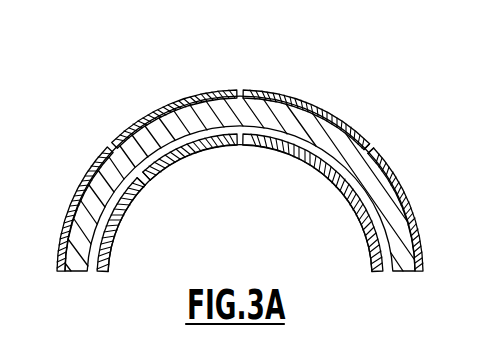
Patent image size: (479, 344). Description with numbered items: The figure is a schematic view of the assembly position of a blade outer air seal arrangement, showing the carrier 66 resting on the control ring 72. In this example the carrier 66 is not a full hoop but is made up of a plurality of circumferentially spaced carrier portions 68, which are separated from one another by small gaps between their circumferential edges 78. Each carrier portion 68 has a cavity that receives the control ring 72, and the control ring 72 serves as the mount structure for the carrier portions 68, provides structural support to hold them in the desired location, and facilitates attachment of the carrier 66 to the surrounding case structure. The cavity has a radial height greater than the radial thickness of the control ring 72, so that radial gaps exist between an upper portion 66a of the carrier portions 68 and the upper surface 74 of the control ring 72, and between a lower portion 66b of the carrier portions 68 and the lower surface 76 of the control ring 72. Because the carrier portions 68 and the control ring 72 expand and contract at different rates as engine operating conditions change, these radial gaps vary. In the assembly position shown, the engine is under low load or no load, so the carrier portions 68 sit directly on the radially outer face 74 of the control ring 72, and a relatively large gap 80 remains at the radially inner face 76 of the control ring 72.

The carrier 66 is at (144, 104).
The upper portion of the carrier portions 66a is at (252, 90).
The lower portion of the carrier portions 66b is at (220, 147).
The carrier portions 68 is at (113, 141).
The control ring 72 is at (294, 110).
The upper surface of the control ring 74 is at (167, 113).
The lower surface of the control ring 76 is at (308, 162).
The circumferential edges of the carrier portions 78 is at (371, 145).
The gap 80 is at (353, 209).